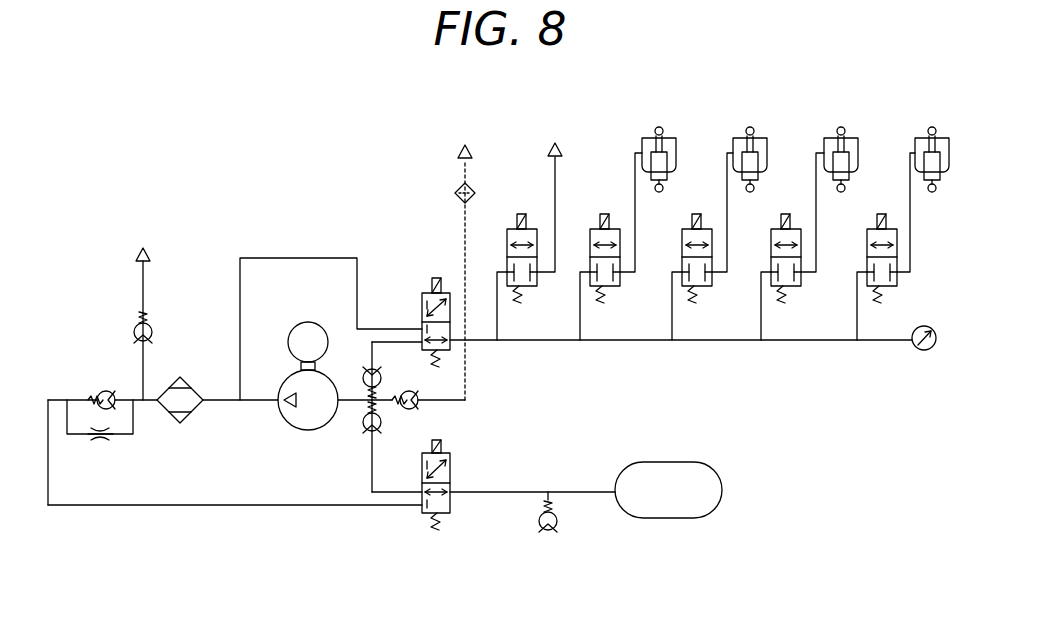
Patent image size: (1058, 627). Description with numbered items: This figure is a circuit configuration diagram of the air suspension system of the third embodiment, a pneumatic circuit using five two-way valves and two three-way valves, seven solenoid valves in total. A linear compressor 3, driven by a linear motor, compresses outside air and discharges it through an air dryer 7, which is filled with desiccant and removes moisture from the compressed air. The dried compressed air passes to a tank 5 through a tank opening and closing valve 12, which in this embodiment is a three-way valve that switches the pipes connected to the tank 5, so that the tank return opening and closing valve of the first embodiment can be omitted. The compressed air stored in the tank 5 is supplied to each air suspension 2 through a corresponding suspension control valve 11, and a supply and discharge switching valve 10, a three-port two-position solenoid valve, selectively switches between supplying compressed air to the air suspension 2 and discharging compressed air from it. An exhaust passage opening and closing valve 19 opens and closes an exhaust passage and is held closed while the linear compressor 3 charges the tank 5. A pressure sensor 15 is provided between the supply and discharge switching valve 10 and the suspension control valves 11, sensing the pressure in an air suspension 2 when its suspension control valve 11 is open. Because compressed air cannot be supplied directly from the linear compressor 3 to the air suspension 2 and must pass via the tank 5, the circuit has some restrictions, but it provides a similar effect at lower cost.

The air suspension 2 is at (665, 138).
The linear compressor 3 is at (310, 431).
The tank 5 is at (668, 462).
The air dryer 7 is at (183, 424).
The supply and discharge switching valve 10 is at (421, 292).
The suspension control valve 11 is at (611, 228).
The tank opening and closing valve 12 is at (447, 452).
The pressure sensor 15 is at (924, 350).
The exhaust passage opening and closing valve 19 is at (533, 227).